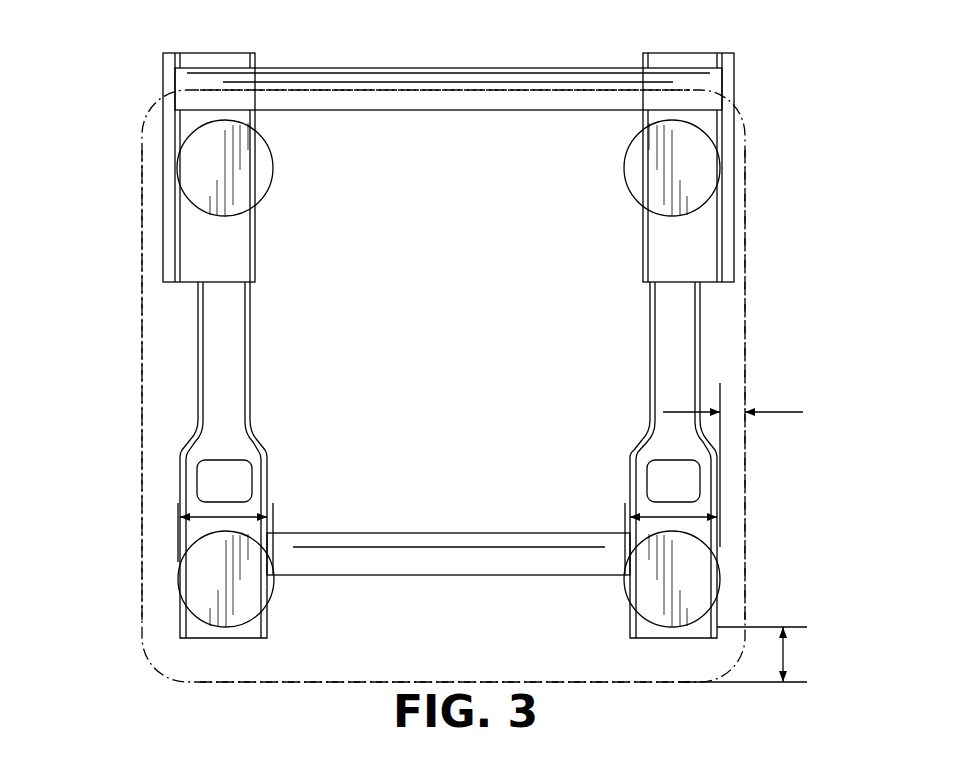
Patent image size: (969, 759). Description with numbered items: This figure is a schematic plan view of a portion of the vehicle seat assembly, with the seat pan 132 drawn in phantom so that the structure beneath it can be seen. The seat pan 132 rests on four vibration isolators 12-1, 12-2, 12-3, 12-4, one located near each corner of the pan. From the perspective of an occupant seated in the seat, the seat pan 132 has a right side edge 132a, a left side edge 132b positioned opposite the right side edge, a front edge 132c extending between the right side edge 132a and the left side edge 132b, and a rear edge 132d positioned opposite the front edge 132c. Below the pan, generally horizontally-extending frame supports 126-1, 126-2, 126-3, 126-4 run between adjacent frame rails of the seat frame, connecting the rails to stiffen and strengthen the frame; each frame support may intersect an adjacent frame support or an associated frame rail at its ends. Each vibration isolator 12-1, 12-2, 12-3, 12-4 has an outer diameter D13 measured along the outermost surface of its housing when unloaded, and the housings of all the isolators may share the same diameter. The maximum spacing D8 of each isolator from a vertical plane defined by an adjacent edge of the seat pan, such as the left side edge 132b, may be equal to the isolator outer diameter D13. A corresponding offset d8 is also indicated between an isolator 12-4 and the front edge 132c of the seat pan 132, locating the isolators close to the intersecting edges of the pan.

The isolator 12-1 is at (210, 572).
The isolator 12-2 is at (210, 168).
The isolator 12-3 is at (697, 167).
The isolator 12-4 is at (700, 592).
The frame support 126-1 is at (340, 577).
The frame support 126-2 is at (200, 357).
The frame support 126-3 is at (702, 338).
The frame support 126-4 is at (470, 100).
The seat pan 132 is at (142, 250).
The right side edge 132a is at (138, 318).
The left side edge 132b is at (745, 262).
The front edge 132c is at (285, 687).
The rear edge 132d is at (395, 88).
The outer diameter D13 is at (202, 515).
The maximum spacing D8 is at (780, 413).
The vertical offset dimension d8 is at (785, 652).